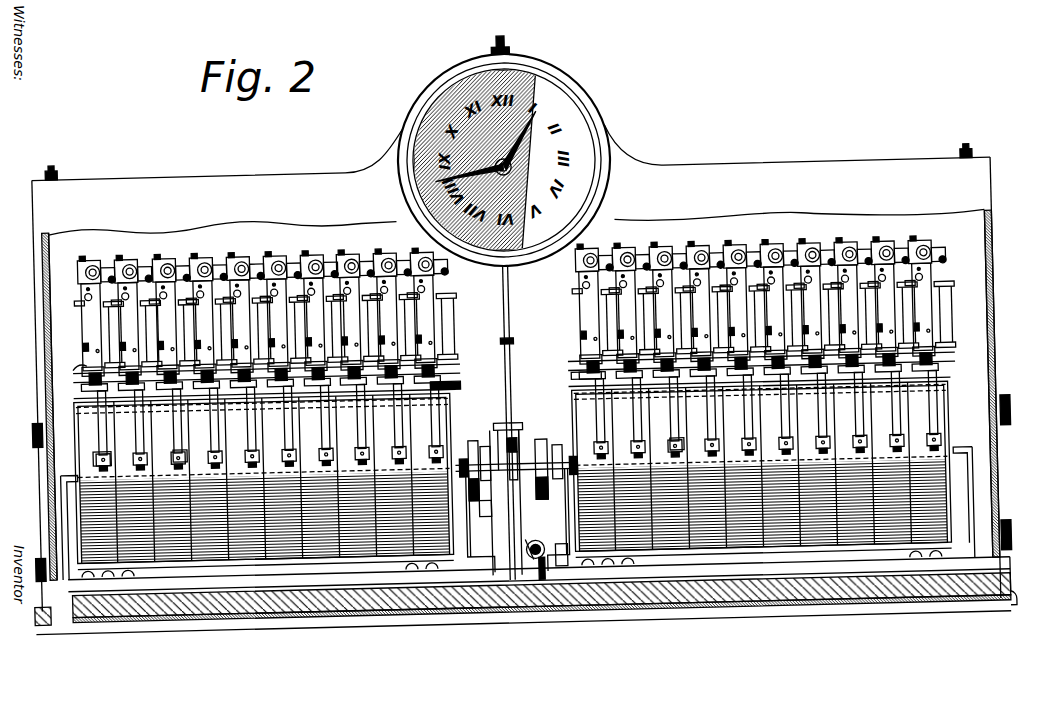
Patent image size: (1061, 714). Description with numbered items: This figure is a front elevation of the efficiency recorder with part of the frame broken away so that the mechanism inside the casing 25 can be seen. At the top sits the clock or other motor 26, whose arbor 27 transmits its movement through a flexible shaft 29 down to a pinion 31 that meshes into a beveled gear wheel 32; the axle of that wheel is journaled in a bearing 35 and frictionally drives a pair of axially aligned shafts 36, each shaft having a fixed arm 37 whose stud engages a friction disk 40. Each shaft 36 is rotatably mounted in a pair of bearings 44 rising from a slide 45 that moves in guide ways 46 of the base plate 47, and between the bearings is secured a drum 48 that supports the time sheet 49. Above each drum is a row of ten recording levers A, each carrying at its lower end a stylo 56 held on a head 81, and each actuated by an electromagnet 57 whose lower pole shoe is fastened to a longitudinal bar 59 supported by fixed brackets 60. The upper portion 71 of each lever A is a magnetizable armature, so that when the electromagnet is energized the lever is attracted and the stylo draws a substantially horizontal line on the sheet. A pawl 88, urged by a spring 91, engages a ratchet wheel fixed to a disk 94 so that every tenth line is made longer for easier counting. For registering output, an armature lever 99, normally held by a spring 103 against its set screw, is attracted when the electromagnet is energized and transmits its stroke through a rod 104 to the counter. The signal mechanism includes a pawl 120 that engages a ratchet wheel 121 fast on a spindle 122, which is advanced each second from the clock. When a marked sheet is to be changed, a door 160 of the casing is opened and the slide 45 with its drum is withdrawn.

The casing 25 is at (220, 188).
The clock or other motor 26 is at (560, 112).
The arbor 27 is at (509, 173).
The flexible shaft 29 is at (507, 303).
The pinion 31 is at (521, 448).
The beveled gear wheel 32 is at (523, 498).
The bearing 35 is at (500, 440).
The shafts 36 is at (464, 462).
The fixed arm 37 is at (470, 440).
The friction disk 40 is at (484, 498).
The bearings 44 is at (1012, 500).
The slide 45 is at (56, 612).
The guide ways 46 is at (290, 577).
The base plate 47 is at (332, 615).
The drum 48 is at (72, 404).
The time sheet 49 is at (215, 548).
The stylo 56 is at (905, 432).
The electromagnet 57 is at (402, 318).
The longitudinal bar 59 is at (68, 378).
The fixed brackets 60 is at (100, 394).
The upper portion of lever A 71 is at (128, 320).
The head 81 is at (108, 462).
The pawl 88 is at (592, 348).
The spring 91 is at (82, 365).
The disk 94 is at (588, 376).
The armature lever 99 is at (84, 274).
The spring 103 is at (166, 262).
The rod 104 is at (246, 262).
The pawl 120 is at (556, 562).
The ratchet wheel 121 is at (528, 562).
The spindle 122 is at (540, 564).
The door 160 is at (42, 456).
The recording lever A is at (216, 428).